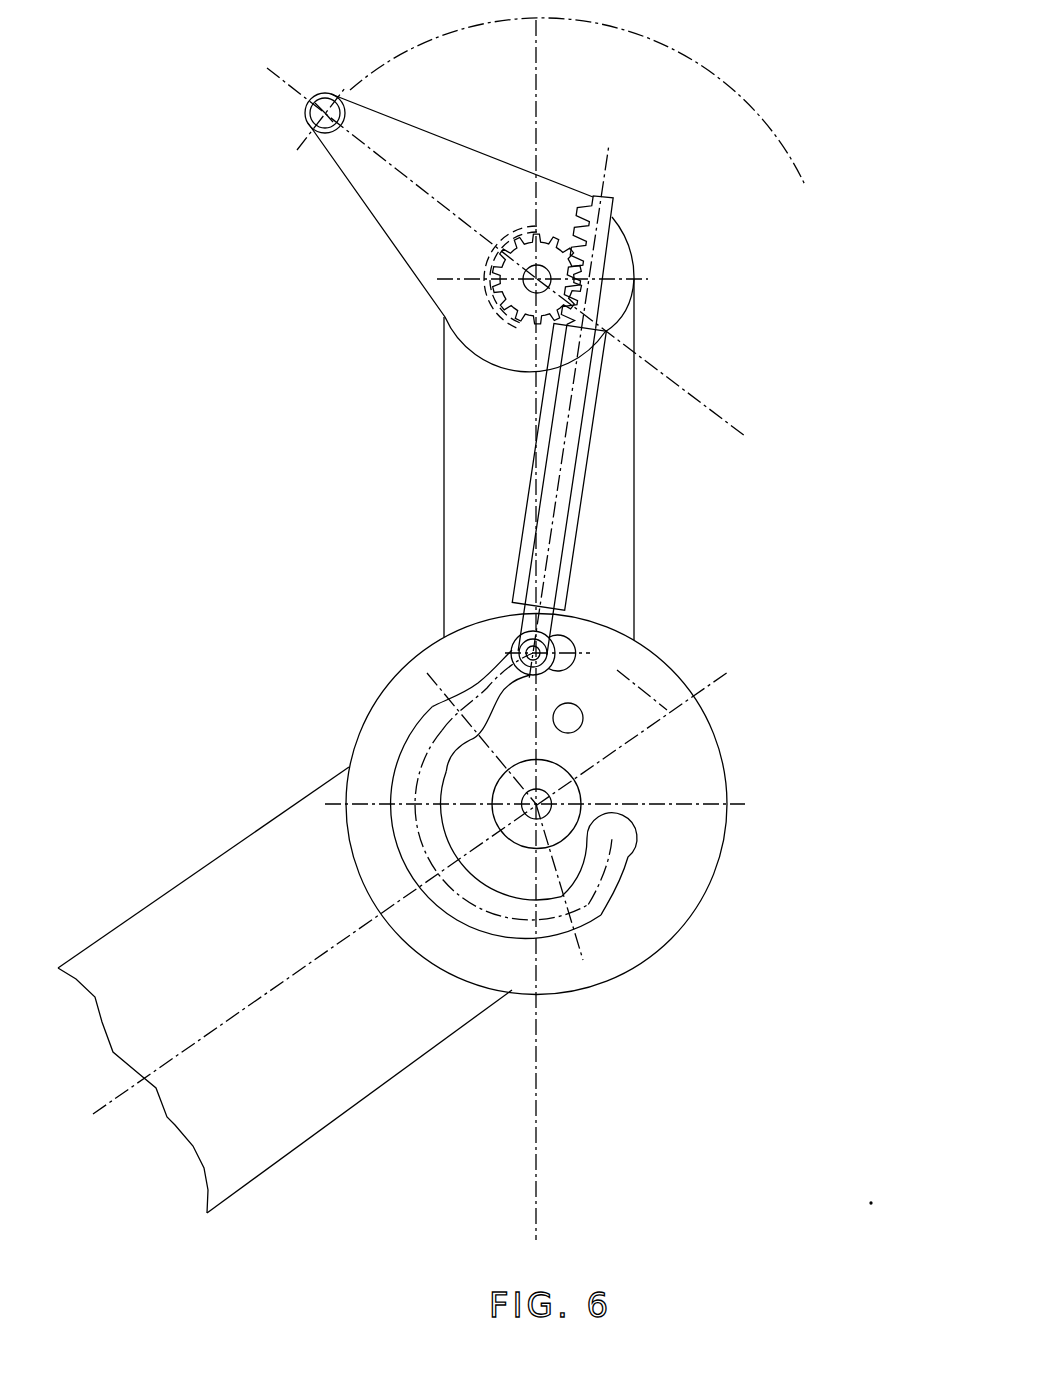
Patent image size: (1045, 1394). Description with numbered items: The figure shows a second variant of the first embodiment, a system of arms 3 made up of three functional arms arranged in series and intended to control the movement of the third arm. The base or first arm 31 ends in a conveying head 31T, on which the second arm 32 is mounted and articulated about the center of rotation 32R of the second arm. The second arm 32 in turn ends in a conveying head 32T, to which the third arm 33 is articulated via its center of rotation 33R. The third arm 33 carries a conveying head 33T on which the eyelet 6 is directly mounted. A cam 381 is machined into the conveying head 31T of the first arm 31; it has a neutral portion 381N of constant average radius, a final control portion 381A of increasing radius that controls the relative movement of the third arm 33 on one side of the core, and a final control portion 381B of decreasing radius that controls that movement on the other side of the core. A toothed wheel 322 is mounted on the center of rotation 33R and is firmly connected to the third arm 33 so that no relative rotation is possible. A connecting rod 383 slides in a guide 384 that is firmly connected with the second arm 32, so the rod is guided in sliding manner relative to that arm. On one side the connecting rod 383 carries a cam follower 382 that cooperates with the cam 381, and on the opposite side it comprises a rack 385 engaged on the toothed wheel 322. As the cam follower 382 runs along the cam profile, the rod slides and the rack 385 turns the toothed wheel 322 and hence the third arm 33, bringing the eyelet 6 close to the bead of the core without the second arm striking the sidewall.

The system of arms 3 is at (600, 1148).
The eyelet 6 is at (328, 92).
The first arm 31 is at (370, 1066).
The conveying head of the first arm 31T is at (590, 1006).
The second arm 32 is at (610, 421).
The conveying head of the second arm 32T is at (652, 298).
The center of rotation of the second arm 32R is at (556, 797).
The third arm 33 is at (410, 228).
The conveying head of the third arm 33T is at (287, 126).
The center of rotation of the third arm 33R is at (492, 300).
The toothed wheel 322 is at (505, 252).
The cam 381 is at (445, 945).
The final control portion with increasing radius 381A is at (470, 668).
The final control portion with decreasing radius 381B is at (620, 870).
The neutral portion 381N is at (410, 862).
The cam follower 382 is at (587, 660).
The connecting rod 383 is at (566, 503).
The guide 384 is at (552, 510).
The rack 385 is at (590, 205).